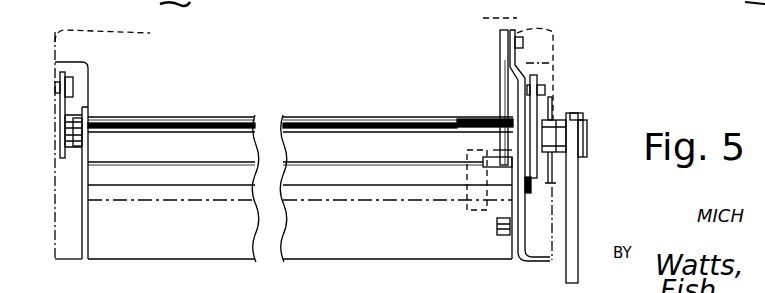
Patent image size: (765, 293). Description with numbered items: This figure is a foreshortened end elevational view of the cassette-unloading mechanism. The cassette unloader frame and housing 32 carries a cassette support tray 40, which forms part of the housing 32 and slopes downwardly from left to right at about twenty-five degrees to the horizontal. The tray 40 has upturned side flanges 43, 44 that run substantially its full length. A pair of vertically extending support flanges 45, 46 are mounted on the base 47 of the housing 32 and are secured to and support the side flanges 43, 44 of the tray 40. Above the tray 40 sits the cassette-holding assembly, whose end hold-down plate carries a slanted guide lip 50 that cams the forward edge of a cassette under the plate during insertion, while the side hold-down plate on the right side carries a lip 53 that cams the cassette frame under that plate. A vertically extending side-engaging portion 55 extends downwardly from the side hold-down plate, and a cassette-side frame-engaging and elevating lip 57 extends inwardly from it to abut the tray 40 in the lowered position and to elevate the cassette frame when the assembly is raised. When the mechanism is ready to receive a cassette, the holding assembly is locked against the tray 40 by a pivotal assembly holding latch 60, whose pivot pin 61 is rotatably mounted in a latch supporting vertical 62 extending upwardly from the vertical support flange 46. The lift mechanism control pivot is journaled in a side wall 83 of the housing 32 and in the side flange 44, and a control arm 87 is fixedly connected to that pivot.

The cassette unloader frame and housing 32 is at (53, 231).
The cassette support tray 40 is at (345, 160).
The side flange 43 is at (92, 107).
The side flange 44 is at (520, 97).
The vertical support flange 45 is at (89, 236).
The vertical support flange 46 is at (512, 262).
The base 47 is at (322, 262).
The slanted guide lip 50 is at (197, 117).
The lip 53 is at (472, 118).
The side-engaging portion 55 is at (500, 153).
The frame-engaging and elevating lip 57 is at (492, 158).
The assembly holding latch 60 is at (503, 57).
The pivot pin 61 is at (524, 43).
The latch supporting vertical 62 is at (518, 32).
The side wall 83 is at (551, 101).
The control arm 87 is at (533, 62).